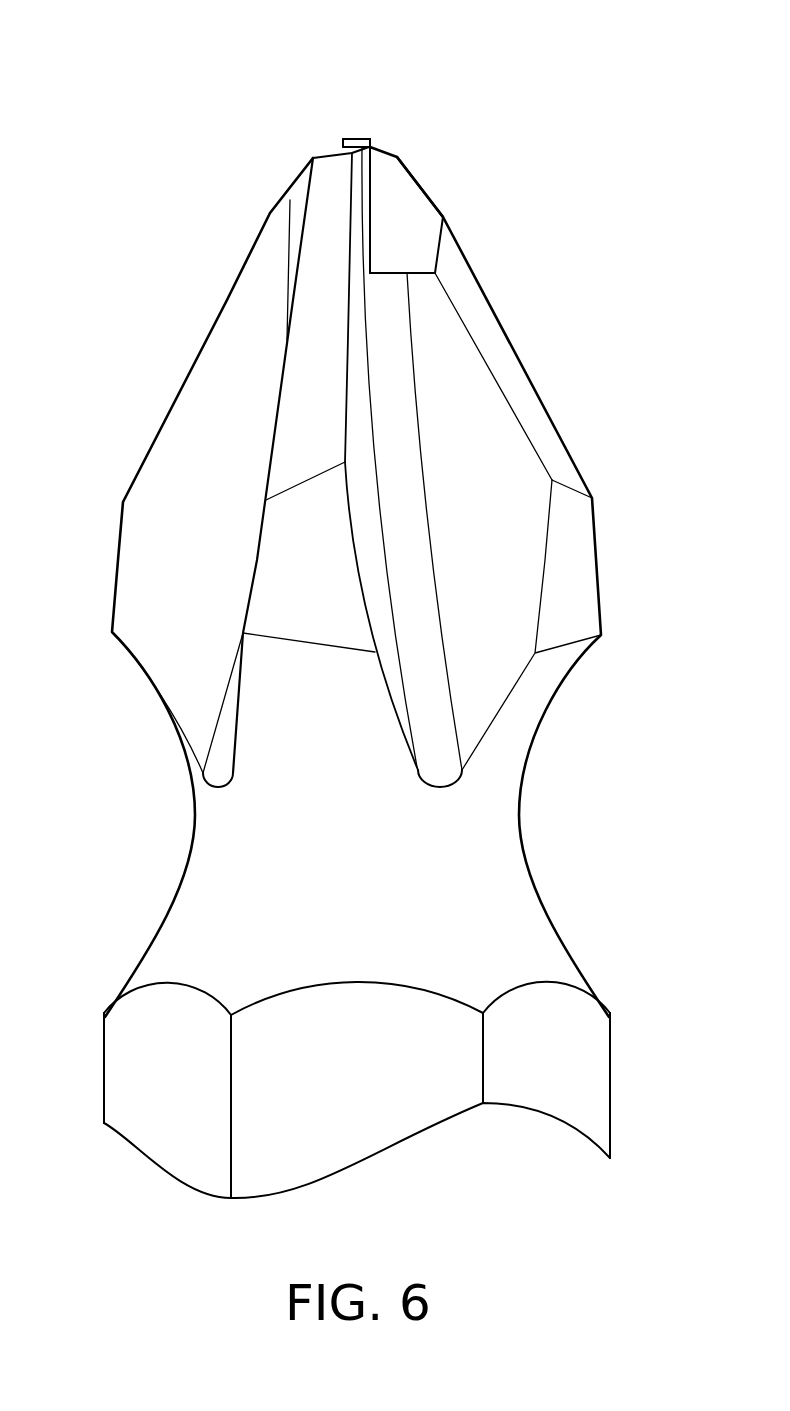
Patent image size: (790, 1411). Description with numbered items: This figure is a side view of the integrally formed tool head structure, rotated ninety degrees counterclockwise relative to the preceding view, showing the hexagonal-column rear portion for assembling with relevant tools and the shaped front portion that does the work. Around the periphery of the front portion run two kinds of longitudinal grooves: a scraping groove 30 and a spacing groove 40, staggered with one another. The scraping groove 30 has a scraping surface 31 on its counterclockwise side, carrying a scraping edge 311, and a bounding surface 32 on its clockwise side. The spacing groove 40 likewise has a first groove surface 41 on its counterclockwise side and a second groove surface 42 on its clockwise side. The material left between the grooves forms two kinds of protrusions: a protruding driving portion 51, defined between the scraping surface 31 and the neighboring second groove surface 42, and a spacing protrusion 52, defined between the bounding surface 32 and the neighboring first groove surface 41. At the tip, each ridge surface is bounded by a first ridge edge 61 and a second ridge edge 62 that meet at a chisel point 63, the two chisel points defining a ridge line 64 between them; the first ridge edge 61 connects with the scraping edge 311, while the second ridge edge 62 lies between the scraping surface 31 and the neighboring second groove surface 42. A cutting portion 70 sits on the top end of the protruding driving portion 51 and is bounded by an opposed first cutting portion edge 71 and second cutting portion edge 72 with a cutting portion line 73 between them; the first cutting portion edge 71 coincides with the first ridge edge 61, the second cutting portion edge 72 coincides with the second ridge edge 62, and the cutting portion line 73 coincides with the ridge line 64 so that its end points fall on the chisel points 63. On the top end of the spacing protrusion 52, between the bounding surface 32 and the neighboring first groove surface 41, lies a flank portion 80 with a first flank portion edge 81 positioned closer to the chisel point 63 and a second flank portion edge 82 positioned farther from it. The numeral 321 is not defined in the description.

The scraping groove 30 is at (483, 639).
The scraping surface 31 is at (382, 627).
The scraping edge 311 is at (350, 282).
The bounding surface 32 is at (505, 575).
The margin edge 321 is at (512, 407).
The spacing groove 40 is at (167, 540).
The first groove surface 41 is at (213, 422).
The second groove surface 42 is at (233, 728).
The protruding driving portion 51 is at (307, 353).
The spacing protrusion 52 is at (560, 460).
The first ridge edge 61 is at (431, 95).
The first cutting portion edge 71 is at (372, 138).
The second ridge edge 62 is at (258, 119).
The second cutting portion edge 72 is at (343, 146).
The chisel point 63 is at (370, 138).
The ridge line 64 is at (302, 86).
The cutting portion line 73 is at (367, 137).
The cutting portion 70 is at (352, 152).
The flank portion 80 is at (407, 230).
The first flank portion edge 81 is at (413, 180).
The second flank portion edge 82 is at (420, 278).